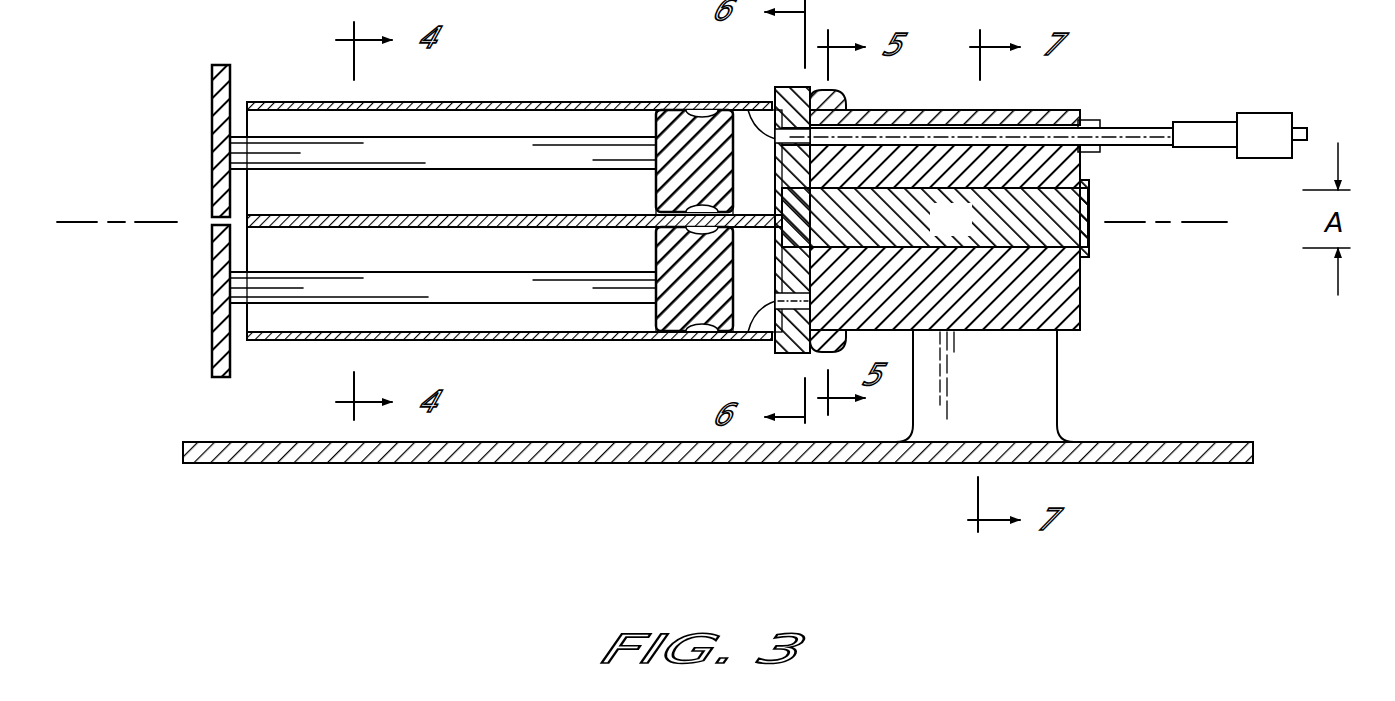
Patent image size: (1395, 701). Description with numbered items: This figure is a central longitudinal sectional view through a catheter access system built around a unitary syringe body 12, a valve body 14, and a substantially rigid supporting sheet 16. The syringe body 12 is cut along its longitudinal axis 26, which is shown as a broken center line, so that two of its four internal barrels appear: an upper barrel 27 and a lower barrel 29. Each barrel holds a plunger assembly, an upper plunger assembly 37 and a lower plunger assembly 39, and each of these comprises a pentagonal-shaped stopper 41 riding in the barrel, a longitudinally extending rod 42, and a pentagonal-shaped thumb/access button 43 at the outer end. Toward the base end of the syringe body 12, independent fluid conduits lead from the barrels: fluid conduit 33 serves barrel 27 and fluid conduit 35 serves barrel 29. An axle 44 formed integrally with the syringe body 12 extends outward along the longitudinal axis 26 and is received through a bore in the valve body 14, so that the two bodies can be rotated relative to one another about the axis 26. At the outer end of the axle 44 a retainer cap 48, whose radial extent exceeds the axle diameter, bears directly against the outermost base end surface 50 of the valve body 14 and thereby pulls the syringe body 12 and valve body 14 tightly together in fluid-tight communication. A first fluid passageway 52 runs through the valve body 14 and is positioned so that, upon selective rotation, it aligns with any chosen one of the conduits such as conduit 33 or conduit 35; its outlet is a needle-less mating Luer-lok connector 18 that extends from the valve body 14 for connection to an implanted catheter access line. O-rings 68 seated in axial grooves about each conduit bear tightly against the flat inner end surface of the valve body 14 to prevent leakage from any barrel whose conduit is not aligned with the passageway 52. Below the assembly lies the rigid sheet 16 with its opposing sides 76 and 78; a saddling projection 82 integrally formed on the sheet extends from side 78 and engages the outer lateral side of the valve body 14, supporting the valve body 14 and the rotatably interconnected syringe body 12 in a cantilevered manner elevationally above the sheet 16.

The syringe body 12 is at (577, 101).
The valve body 14 is at (1046, 108).
The rigid supporting sheet 16 is at (581, 464).
The Luer-lok connector 18 is at (1273, 132).
The longitudinal axis 26 is at (75, 223).
The barrel 27 is at (300, 125).
The barrel 29 is at (495, 317).
The fluid conduit 33 is at (750, 108).
The fluid conduit 35 is at (748, 328).
The plunger assembly 37 is at (212, 95).
The plunger assembly 39 is at (212, 350).
The stopper 41 is at (660, 108).
The rod 42 is at (505, 150).
The thumb/access button 43 is at (222, 152).
The axle 44 is at (966, 233).
The retainer cap 48 is at (1090, 185).
The outermost base end surface 50 is at (1082, 303).
The first fluid passageway 52 is at (942, 137).
The O-ring 68 is at (786, 88).
The side of sheet 76 is at (443, 464).
The side of sheet 78 is at (531, 441).
The saddling projection 82 is at (1008, 387).